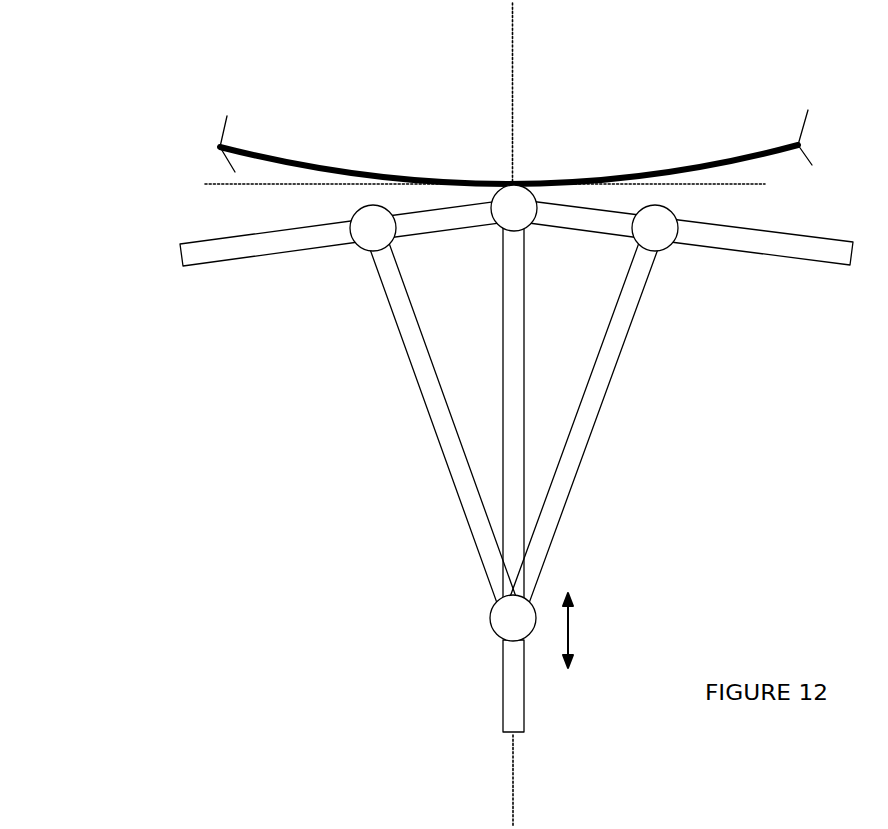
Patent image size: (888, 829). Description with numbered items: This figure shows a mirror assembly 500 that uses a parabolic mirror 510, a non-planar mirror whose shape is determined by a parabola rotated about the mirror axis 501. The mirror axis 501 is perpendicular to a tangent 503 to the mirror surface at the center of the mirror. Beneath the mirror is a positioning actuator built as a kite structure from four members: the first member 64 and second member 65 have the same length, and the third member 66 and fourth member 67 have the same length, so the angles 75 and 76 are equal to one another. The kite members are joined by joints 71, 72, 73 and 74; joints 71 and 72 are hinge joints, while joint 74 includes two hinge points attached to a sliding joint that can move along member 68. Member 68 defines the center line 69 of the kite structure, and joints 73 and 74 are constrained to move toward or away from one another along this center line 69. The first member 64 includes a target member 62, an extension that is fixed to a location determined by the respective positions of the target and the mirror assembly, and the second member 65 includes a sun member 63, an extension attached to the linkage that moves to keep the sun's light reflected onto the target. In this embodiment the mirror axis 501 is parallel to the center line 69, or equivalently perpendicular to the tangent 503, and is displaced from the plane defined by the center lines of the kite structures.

The mirror assembly 500 is at (124, 96).
The mirror axis 501 is at (514, 67).
The tangent 503 is at (697, 184).
The parabolic mirror 510 is at (305, 158).
The target member 62 is at (762, 245).
The sun member 63 is at (265, 245).
The first member 64 is at (565, 219).
The second member 65 is at (468, 226).
The third member 66 is at (427, 380).
The fourth member 67 is at (600, 382).
The member 68 is at (510, 683).
The center line of the kite structure 69 is at (513, 770).
The hinge joint 71 is at (655, 228).
The hinge joint 72 is at (373, 229).
The joint 73 is at (515, 208).
The joint 74 is at (513, 618).
The angle 75 is at (424, 233).
The angle 76 is at (600, 230).